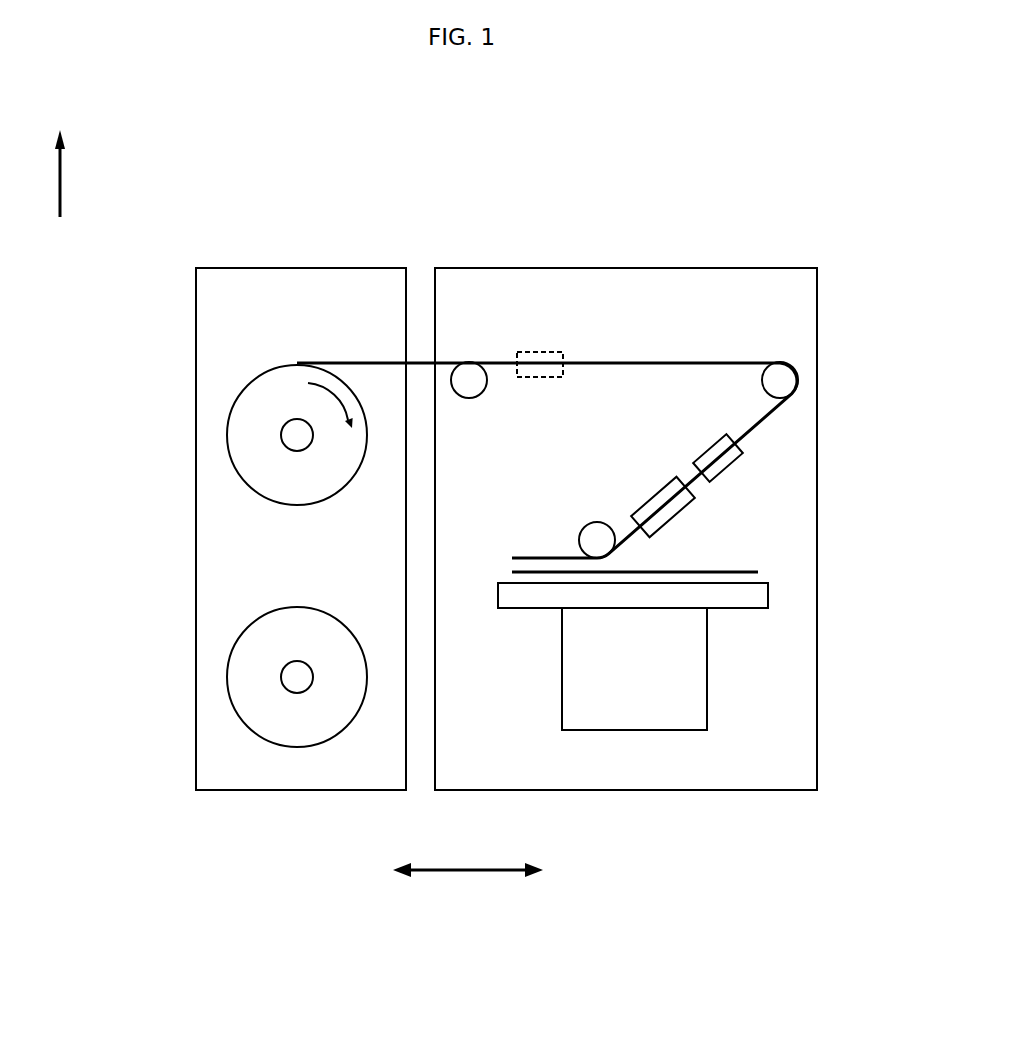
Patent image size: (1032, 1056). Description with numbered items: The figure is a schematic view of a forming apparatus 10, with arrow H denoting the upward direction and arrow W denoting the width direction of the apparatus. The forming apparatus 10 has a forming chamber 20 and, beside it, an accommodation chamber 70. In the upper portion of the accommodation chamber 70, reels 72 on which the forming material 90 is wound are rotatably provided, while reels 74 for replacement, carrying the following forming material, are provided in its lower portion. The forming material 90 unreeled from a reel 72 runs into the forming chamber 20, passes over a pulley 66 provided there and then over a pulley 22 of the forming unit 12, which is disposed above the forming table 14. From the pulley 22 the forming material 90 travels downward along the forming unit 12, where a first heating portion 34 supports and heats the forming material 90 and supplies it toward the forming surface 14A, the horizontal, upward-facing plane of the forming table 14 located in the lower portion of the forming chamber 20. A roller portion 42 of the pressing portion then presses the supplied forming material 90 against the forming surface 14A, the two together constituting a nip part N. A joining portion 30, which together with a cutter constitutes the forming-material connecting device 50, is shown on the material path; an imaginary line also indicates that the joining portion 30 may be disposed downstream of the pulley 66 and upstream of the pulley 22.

The forming apparatus 10 is at (722, 230).
The forming unit 12 is at (800, 500).
The forming table 14 is at (728, 620).
The forming surface 14A is at (768, 582).
The forming chamber 20 is at (822, 263).
The pulley 22 is at (783, 383).
The joining portion 30 is at (538, 348).
The first heating portion 34 is at (680, 522).
The roller portion 42 is at (592, 518).
The forming-material connecting device 50 is at (706, 440).
The pulley 66 is at (470, 388).
The accommodation chamber 70 is at (194, 266).
The reel 72 is at (226, 422).
The reel for replacement 74 is at (226, 672).
The forming material 90 is at (760, 423).
The nip part N is at (600, 562).
The arrow H is at (59, 158).
The arrow W is at (472, 875).